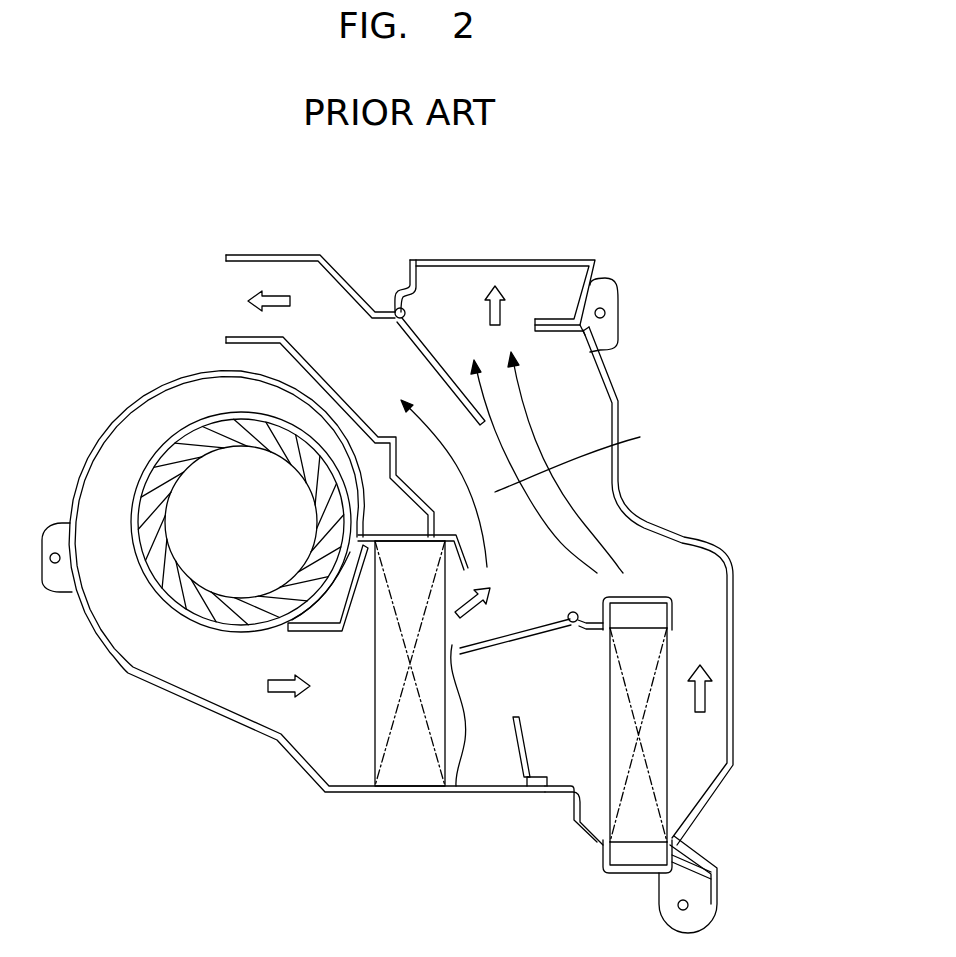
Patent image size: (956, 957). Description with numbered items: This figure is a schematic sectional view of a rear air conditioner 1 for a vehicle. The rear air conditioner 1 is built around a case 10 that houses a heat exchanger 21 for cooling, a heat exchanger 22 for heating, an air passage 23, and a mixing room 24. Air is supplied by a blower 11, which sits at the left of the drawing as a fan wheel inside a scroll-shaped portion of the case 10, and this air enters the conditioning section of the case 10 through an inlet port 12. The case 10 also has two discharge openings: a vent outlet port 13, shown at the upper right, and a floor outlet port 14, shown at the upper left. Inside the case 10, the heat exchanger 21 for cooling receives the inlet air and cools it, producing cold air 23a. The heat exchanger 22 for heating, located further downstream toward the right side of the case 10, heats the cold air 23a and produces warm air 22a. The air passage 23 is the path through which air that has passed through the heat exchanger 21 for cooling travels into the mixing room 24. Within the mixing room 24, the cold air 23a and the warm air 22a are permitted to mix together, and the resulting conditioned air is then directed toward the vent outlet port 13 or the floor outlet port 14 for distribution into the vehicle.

The rear air conditioner 1 is at (678, 222).
The case 10 is at (120, 673).
The blower 11 is at (183, 452).
The inlet port 12 is at (330, 703).
The vent outlet port 13 is at (548, 264).
The floor outlet port 14 is at (230, 292).
The heat exchanger for cooling 21 is at (403, 766).
The heat exchanger for heating 22 is at (634, 832).
The warm air 22a is at (533, 443).
The air passage 23 is at (465, 786).
The cold air 23a is at (453, 452).
The mixing room 24 is at (581, 458).